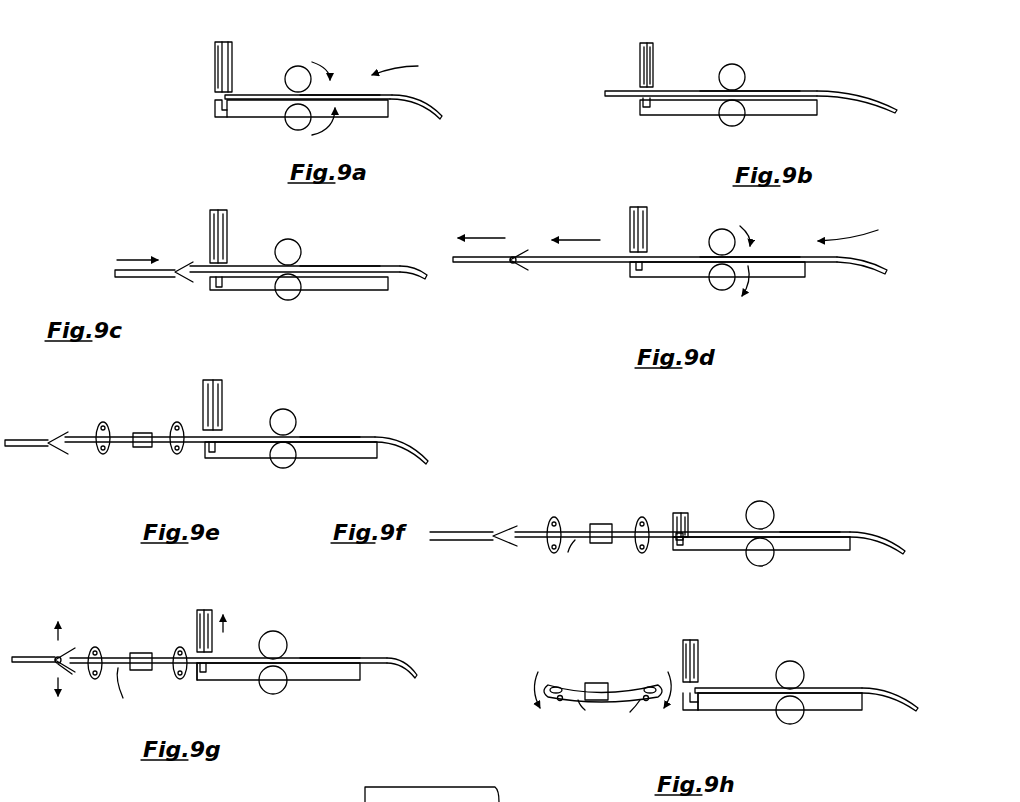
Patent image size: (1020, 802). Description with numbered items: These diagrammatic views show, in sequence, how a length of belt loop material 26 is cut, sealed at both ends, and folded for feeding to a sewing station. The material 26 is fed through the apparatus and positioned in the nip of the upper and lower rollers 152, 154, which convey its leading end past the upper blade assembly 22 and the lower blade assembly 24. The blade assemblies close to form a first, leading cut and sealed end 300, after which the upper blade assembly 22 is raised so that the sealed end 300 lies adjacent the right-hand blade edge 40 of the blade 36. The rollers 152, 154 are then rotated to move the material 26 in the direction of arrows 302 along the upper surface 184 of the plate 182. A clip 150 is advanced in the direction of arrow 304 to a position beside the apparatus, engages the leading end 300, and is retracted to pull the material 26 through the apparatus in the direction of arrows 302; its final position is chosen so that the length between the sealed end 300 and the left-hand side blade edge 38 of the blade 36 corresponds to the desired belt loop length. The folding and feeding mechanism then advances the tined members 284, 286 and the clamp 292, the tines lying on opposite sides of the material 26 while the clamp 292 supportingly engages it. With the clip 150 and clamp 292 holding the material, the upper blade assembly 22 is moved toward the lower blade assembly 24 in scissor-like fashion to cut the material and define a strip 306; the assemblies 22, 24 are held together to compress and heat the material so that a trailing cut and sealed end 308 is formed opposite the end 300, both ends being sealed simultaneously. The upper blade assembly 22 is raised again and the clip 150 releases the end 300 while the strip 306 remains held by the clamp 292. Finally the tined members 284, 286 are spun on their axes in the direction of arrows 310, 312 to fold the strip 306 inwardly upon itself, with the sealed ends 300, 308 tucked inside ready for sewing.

In FIG. 9A, the upper blade assembly 22 is at (212, 44).
In FIG. 9B, the upper blade assembly 22 is at (637, 42).
In FIG. 9C, the upper blade assembly 22 is at (207, 211).
In FIG. 9D, the upper blade assembly 22 is at (627, 207).
In FIG. 9E, the upper blade assembly 22 is at (225, 380).
In FIG. 9F, the upper blade assembly 22 is at (676, 512).
In FIG. 9G, the upper blade assembly 22 is at (215, 617).
In FIG. 9H, the upper blade assembly 22 is at (700, 652).
In FIG. 9A, the lower blade assembly 24 is at (210, 118).
In FIG. 9B, the lower blade assembly 24 is at (640, 109).
In FIG. 9C, the lower blade assembly 24 is at (217, 292).
In FIG. 9D, the lower blade assembly 24 is at (630, 278).
In FIG. 9E, the lower blade assembly 24 is at (205, 460).
In FIG. 9F, the lower blade assembly 24 is at (685, 553).
In FIG. 9G, the lower blade assembly 24 is at (207, 682).
In FIG. 9H, the lower blade assembly 24 is at (701, 708).
In FIG. 9A, the material 26 is at (433, 107).
In FIG. 9B, the material 26 is at (854, 90).
In FIG. 9C, the material 26 is at (402, 264).
In FIG. 9D, the material 26 is at (876, 274).
In FIG. 9E, the material 26 is at (412, 442).
In FIG. 9F, the material 26 is at (868, 534).
In FIG. 9G, the material 26 is at (393, 658).
In FIG. 9H, the material 26 is at (893, 690).
In FIG. 9A, the blade 36 is at (224, 42).
In FIG. 9B, the blade 36 is at (648, 43).
In FIG. 9C, the blade 36 is at (219, 210).
In FIG. 9D, the blade 36 is at (640, 207).
In FIG. 9E, the blade 36 is at (214, 380).
In FIG. 9F, the blade 36 is at (684, 520).
In FIG. 9G, the blade 36 is at (212, 612).
In FIG. 9H, the blade 36 is at (695, 640).
In FIG. 9A, the left-hand side blade edge 38 is at (215, 60).
In FIG. 9B, the left-hand side blade edge 38 is at (640, 58).
In FIG. 9C, the left-hand side blade edge 38 is at (210, 223).
In FIG. 9D, the left-hand side blade edge 38 is at (630, 222).
In FIG. 9E, the left-hand side blade edge 38 is at (203, 385).
In FIG. 9F, the left-hand side blade edge 38 is at (675, 530).
In FIG. 9G, the left-hand side blade edge 38 is at (197, 610).
In FIG. 9H, the left-hand side blade edge 38 is at (683, 645).
In FIG. 9A, the right-hand blade edge 40 is at (232, 58).
In FIG. 9B, the right-hand blade edge 40 is at (653, 56).
In FIG. 9C, the right-hand blade edge 40 is at (227, 223).
In FIG. 9D, the right-hand blade edge 40 is at (647, 222).
In FIG. 9E, the right-hand blade edge 40 is at (222, 398).
In FIG. 9F, the right-hand blade edge 40 is at (690, 528).
In FIG. 9G, the right-hand blade edge 40 is at (212, 640).
In FIG. 9H, the right-hand blade edge 40 is at (698, 668).
In FIG. 9C, the clip 150 is at (185, 264).
In FIG. 9D, the clip 150 is at (530, 267).
In FIG. 9E, the clip 150 is at (58, 452).
In FIG. 9F, the clip 150 is at (510, 548).
In FIG. 9G, the clip 150 is at (48, 666).
In FIG. 9A, the upper roller 152 is at (300, 68).
In FIG. 9B, the upper roller 152 is at (730, 68).
In FIG. 9C, the upper roller 152 is at (290, 240).
In FIG. 9D, the upper roller 152 is at (724, 230).
In FIG. 9E, the upper roller 152 is at (286, 410).
In FIG. 9F, the upper roller 152 is at (762, 504).
In FIG. 9G, the upper roller 152 is at (276, 633).
In FIG. 9H, the upper roller 152 is at (792, 663).
In FIG. 9A, the lower roller 154 is at (290, 120).
In FIG. 9B, the lower roller 154 is at (728, 116).
In FIG. 9C, the lower roller 154 is at (285, 292).
In FIG. 9D, the lower roller 154 is at (718, 281).
In FIG. 9E, the lower roller 154 is at (283, 460).
In FIG. 9G, the lower roller 154 is at (274, 686).
In FIG. 9H, the lower roller 154 is at (785, 716).
In FIG. 9A, the plate 182 is at (383, 120).
In FIG. 9B, the plate 182 is at (795, 111).
In FIG. 9C, the plate 182 is at (365, 292).
In FIG. 9D, the plate 182 is at (800, 279).
In FIG. 9E, the plate 182 is at (360, 460).
In FIG. 9F, the plate 182 is at (835, 552).
In FIG. 9G, the plate 182 is at (340, 682).
In FIG. 9H, the plate 182 is at (838, 712).
In FIG. 9A, the upper surface 184 is at (355, 95).
In FIG. 9B, the upper surface 184 is at (768, 92).
In FIG. 9C, the upper surface 184 is at (333, 266).
In FIG. 9D, the upper surface 184 is at (785, 258).
In FIG. 9E, the upper surface 184 is at (343, 437).
In FIG. 9F, the upper surface 184 is at (805, 532).
In FIG. 9G, the upper surface 184 is at (322, 658).
In FIG. 9H, the upper surface 184 is at (833, 688).
In FIG. 9E, the tined member 284 is at (173, 422).
In FIG. 9F, the tined member 284 is at (640, 517).
In FIG. 9G, the tined member 284 is at (179, 647).
In FIG. 9H, the tined member 284 is at (648, 682).
In FIG. 9E, the tined member 286 is at (103, 422).
In FIG. 9F, the tined member 286 is at (554, 517).
In FIG. 9G, the tined member 286 is at (95, 647).
In FIG. 9H, the tined member 286 is at (555, 702).
In FIG. 9E, the clamp 292 is at (141, 448).
In FIG. 9F, the clamp 292 is at (599, 523).
In FIG. 9G, the clamp 292 is at (140, 652).
In FIG. 9H, the clamp 292 is at (596, 682).
In FIG. 9A, the cut and sealed end 300 is at (275, 80).
In FIG. 9B, the cut and sealed end 300 is at (605, 94).
In FIG. 9C, the cut and sealed end 300 is at (185, 280).
In FIG. 9D, the cut and sealed end 300 is at (508, 266).
In FIG. 9E, the cut and sealed end 300 is at (62, 435).
In FIG. 9F, the cut and sealed end 300 is at (510, 529).
In FIG. 9G, the cut and sealed end 300 is at (62, 672).
In FIG. 9H, the cut and sealed end 300 is at (575, 702).
In FIG. 9A, the arrows 302 is at (408, 62).
In FIG. 9D, the arrows 302 is at (490, 235).
In FIG. 9C, the arrow 304 is at (118, 256).
In FIG. 9F, the strip 306 is at (575, 545).
In FIG. 9G, the strip 306 is at (127, 696).
In FIG. 9H, the strip 306 is at (592, 713).
In FIG. 9F, the cut and sealed end 308 is at (676, 542).
In FIG. 9G, the cut and sealed end 308 is at (199, 675).
In FIG. 9H, the cut and sealed end 308 is at (642, 719).
In FIG. 9H, the arrow 310 is at (528, 694).
In FIG. 9H, the arrow 312 is at (686, 710).